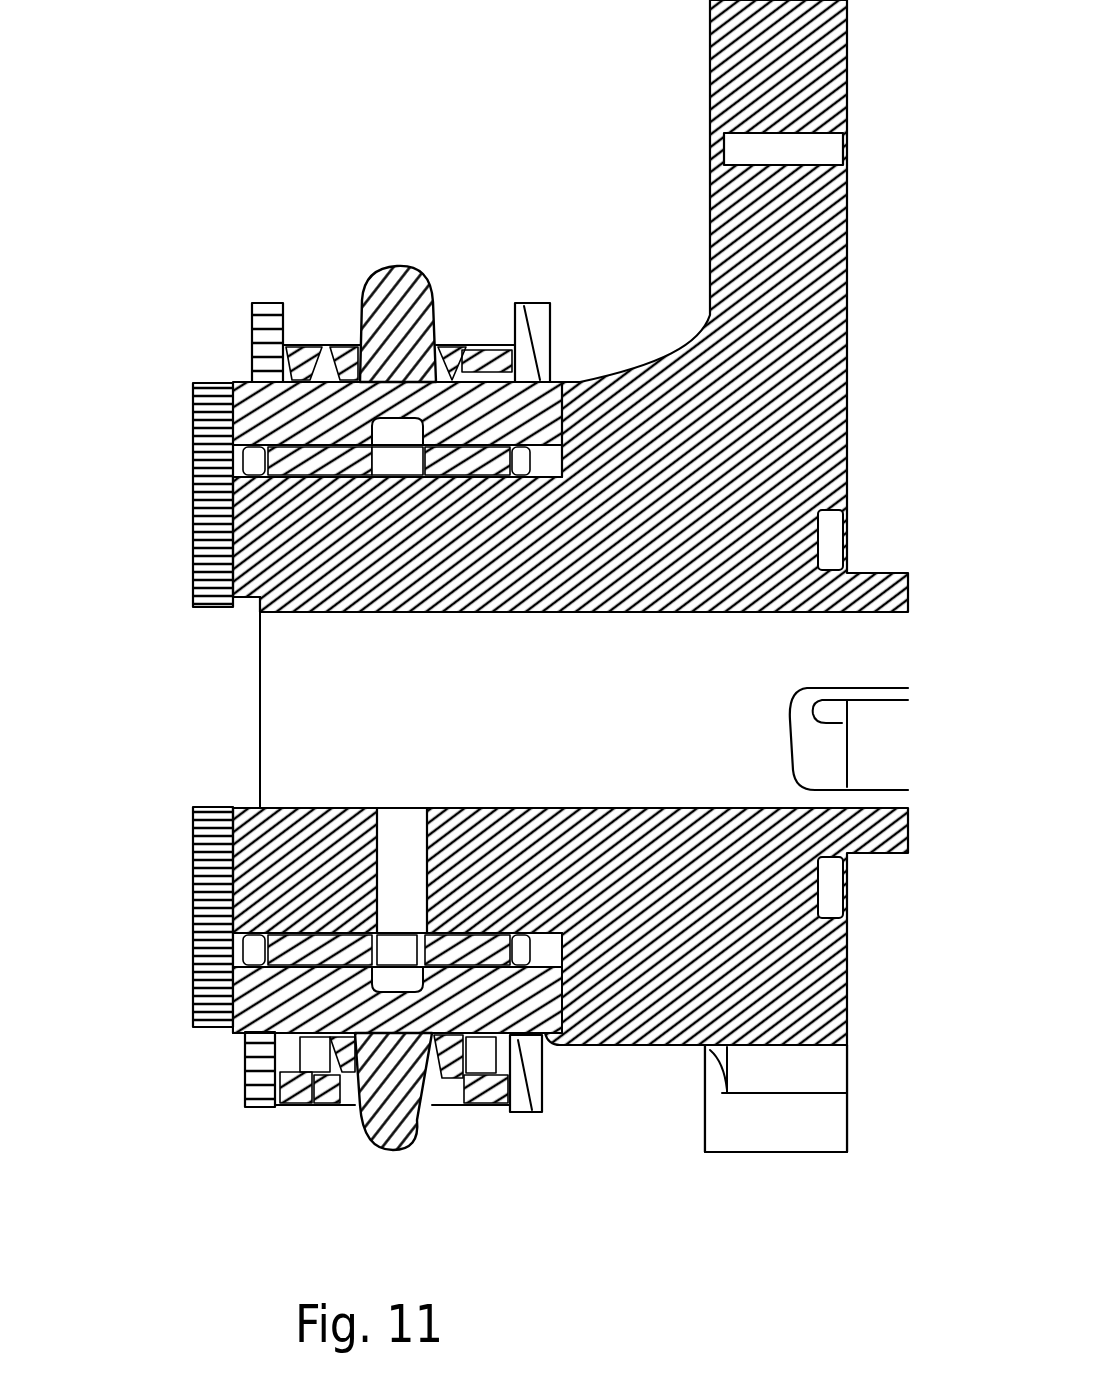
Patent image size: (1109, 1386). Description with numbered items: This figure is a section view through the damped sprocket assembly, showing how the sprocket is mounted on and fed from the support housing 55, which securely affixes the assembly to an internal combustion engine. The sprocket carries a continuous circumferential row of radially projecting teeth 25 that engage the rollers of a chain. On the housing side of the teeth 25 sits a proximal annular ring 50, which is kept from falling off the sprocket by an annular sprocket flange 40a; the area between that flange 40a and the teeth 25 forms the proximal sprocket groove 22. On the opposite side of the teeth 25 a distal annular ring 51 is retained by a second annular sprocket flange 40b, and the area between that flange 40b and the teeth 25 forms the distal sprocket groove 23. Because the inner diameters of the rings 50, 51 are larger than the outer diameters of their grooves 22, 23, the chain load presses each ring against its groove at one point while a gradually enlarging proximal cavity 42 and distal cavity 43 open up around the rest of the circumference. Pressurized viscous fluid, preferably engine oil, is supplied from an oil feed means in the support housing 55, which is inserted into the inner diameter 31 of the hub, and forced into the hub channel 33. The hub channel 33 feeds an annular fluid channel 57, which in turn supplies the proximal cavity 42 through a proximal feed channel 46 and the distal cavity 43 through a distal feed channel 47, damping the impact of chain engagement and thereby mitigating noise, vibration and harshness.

The proximal sprocket groove 22 is at (475, 345).
The distal sprocket groove 23 is at (318, 343).
The teeth 25 is at (395, 267).
The inner diameter 31 is at (313, 805).
The hub channel 33 is at (418, 870).
The annular sprocket flange 40a is at (548, 338).
The annular sprocket flange 40b is at (252, 344).
The proximal cavity 42 is at (468, 1058).
The distal cavity 43 is at (331, 1052).
The proximal feed channel 46 is at (407, 1002).
The distal feed channel 47 is at (363, 1012).
The proximal annular ring 50 is at (447, 345).
The distal annular ring 51 is at (343, 343).
The support housing 55 is at (790, 413).
The annular fluid channel 57 is at (393, 438).